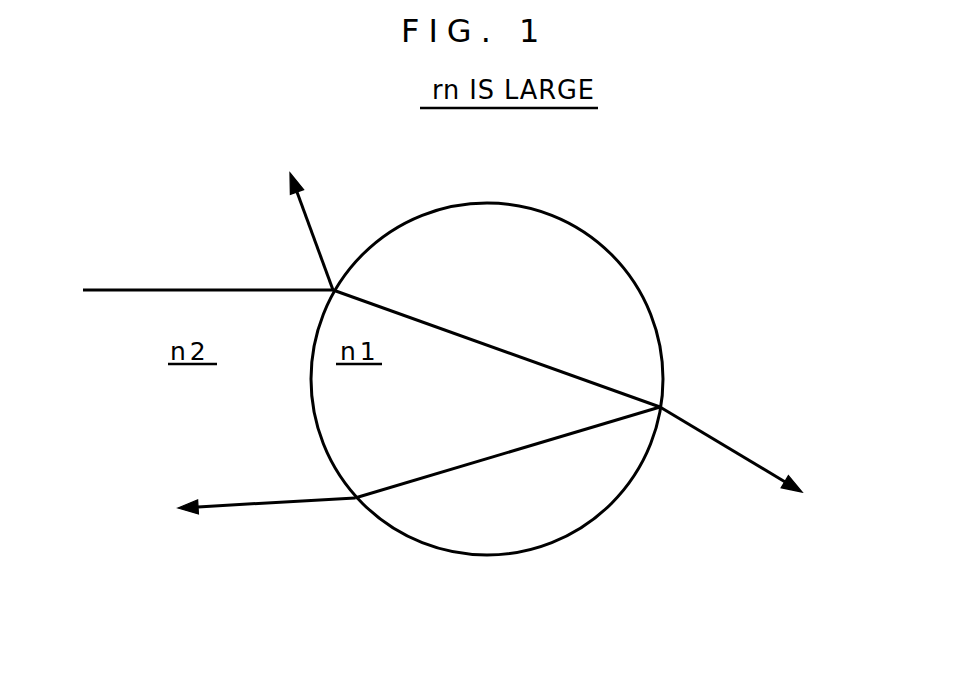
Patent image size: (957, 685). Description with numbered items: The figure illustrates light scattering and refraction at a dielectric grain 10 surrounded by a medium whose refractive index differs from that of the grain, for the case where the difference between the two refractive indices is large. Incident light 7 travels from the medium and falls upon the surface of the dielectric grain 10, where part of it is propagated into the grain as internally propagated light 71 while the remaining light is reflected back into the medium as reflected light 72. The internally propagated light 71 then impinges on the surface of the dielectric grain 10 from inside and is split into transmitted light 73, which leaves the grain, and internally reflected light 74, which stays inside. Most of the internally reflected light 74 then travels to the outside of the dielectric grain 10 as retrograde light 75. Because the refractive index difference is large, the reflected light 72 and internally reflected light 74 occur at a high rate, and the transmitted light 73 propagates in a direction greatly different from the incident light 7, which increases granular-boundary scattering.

The dielectric grain 10 is at (567, 512).
The incident light 7 is at (145, 289).
The internally propagated light 71 is at (508, 352).
The reflected light 72 is at (302, 198).
The transmitted light 73 is at (713, 437).
The internally reflected light 74 is at (438, 473).
The retrograde light 75 is at (252, 507).